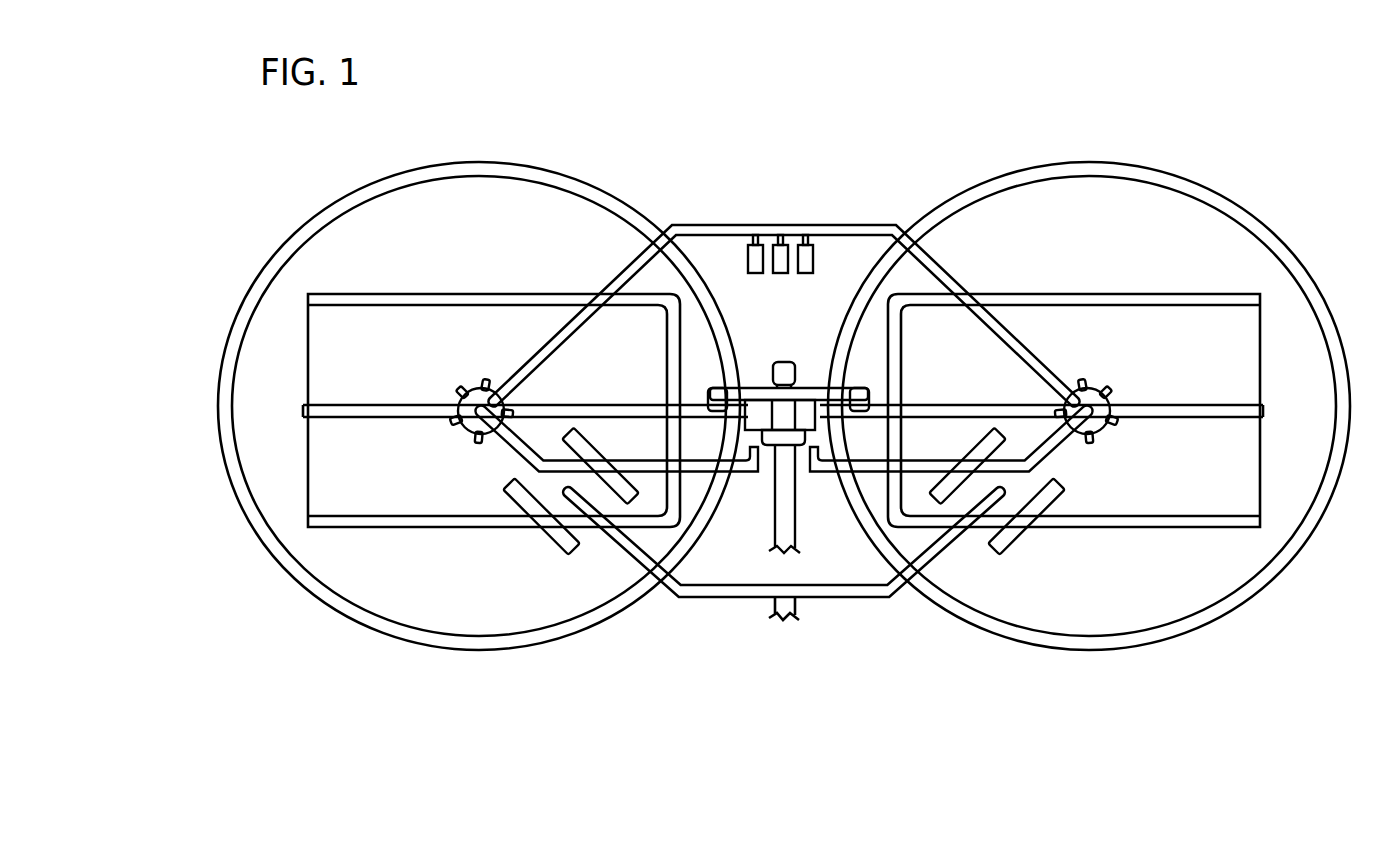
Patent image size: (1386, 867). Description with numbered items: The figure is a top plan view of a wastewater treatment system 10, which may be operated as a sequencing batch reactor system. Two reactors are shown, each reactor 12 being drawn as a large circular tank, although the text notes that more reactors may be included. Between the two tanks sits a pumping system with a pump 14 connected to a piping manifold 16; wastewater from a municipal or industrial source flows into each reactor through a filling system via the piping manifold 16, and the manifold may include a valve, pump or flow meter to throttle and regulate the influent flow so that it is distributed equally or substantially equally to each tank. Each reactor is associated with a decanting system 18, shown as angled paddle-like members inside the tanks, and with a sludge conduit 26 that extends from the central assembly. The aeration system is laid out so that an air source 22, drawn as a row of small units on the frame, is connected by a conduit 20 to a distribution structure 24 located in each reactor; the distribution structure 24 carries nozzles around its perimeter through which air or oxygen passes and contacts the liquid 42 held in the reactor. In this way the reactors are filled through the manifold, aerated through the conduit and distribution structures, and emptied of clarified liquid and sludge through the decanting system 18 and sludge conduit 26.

The wastewater treatment system 10 is at (721, 629).
The reactor 12 is at (347, 594).
The pump 14 is at (772, 364).
The piping manifold 16 is at (803, 384).
The decanting system 18 is at (624, 552).
The conduit 20 is at (942, 258).
The air source 22 is at (755, 275).
The distribution structure 24 is at (465, 385).
The sludge conduit 26 is at (775, 512).
The liquid 42 is at (1262, 493).